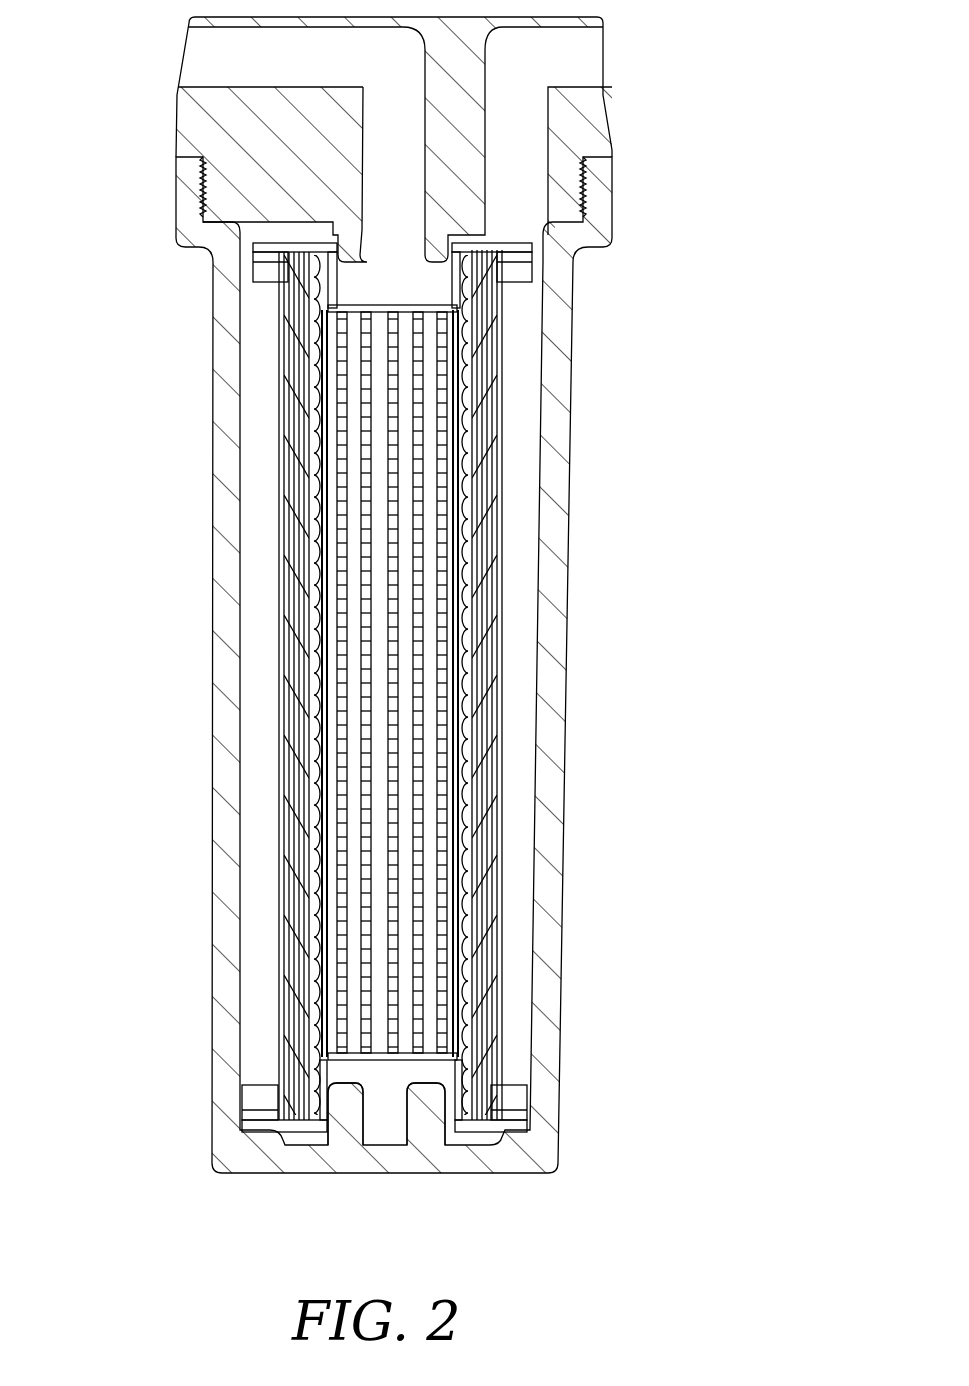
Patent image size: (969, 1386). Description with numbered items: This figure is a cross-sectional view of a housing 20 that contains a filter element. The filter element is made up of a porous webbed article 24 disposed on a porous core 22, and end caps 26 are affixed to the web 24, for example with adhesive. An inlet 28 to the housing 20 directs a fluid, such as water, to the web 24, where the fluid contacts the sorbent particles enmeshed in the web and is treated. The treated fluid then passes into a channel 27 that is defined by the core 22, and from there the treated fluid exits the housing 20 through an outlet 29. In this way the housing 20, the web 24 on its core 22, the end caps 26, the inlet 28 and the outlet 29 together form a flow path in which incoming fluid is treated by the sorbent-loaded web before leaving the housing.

The housing 20 is at (433, 632).
The porous core 22 is at (393, 685).
The porous webbed article 24 is at (500, 584).
The end caps 26 is at (540, 268).
The channel 27 is at (373, 1060).
The inlet 28 is at (391, 139).
The outlet 29 is at (205, 48).